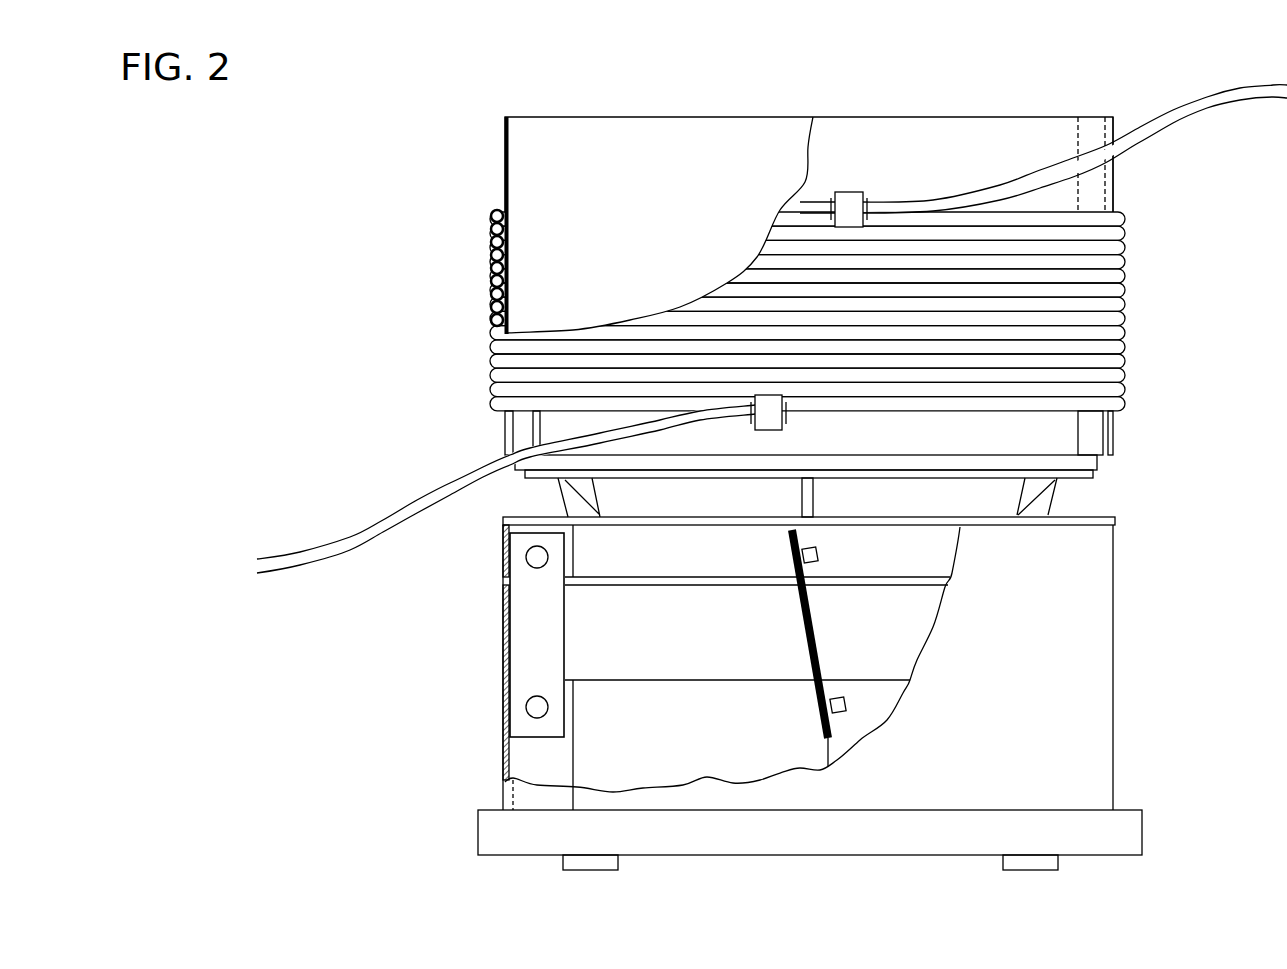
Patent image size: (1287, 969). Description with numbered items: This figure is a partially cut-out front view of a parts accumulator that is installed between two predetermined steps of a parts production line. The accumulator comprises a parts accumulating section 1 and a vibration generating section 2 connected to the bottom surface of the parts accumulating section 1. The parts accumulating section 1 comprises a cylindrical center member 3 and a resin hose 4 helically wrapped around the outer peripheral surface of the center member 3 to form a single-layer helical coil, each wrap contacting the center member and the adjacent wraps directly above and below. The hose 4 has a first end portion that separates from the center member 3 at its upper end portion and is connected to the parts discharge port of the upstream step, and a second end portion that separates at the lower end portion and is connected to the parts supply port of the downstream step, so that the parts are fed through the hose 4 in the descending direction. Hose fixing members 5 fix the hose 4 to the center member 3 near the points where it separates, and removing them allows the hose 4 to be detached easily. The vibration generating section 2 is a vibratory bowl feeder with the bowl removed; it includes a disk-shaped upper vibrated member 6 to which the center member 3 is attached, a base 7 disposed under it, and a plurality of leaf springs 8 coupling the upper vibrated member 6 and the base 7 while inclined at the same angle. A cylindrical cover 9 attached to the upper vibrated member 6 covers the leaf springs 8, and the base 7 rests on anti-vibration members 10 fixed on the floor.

The parts accumulating section 1 is at (498, 130).
The vibration generating section 2 is at (1120, 543).
The center member 3 is at (600, 218).
The hose 4 is at (1197, 110).
The hose fixing member 5 is at (851, 205).
The upper vibrated member 6 is at (642, 548).
The base 7 is at (537, 757).
The leaf spring 8 is at (538, 643).
The cylindrical cover 9 is at (1060, 636).
The anti-vibration member 10 is at (588, 862).